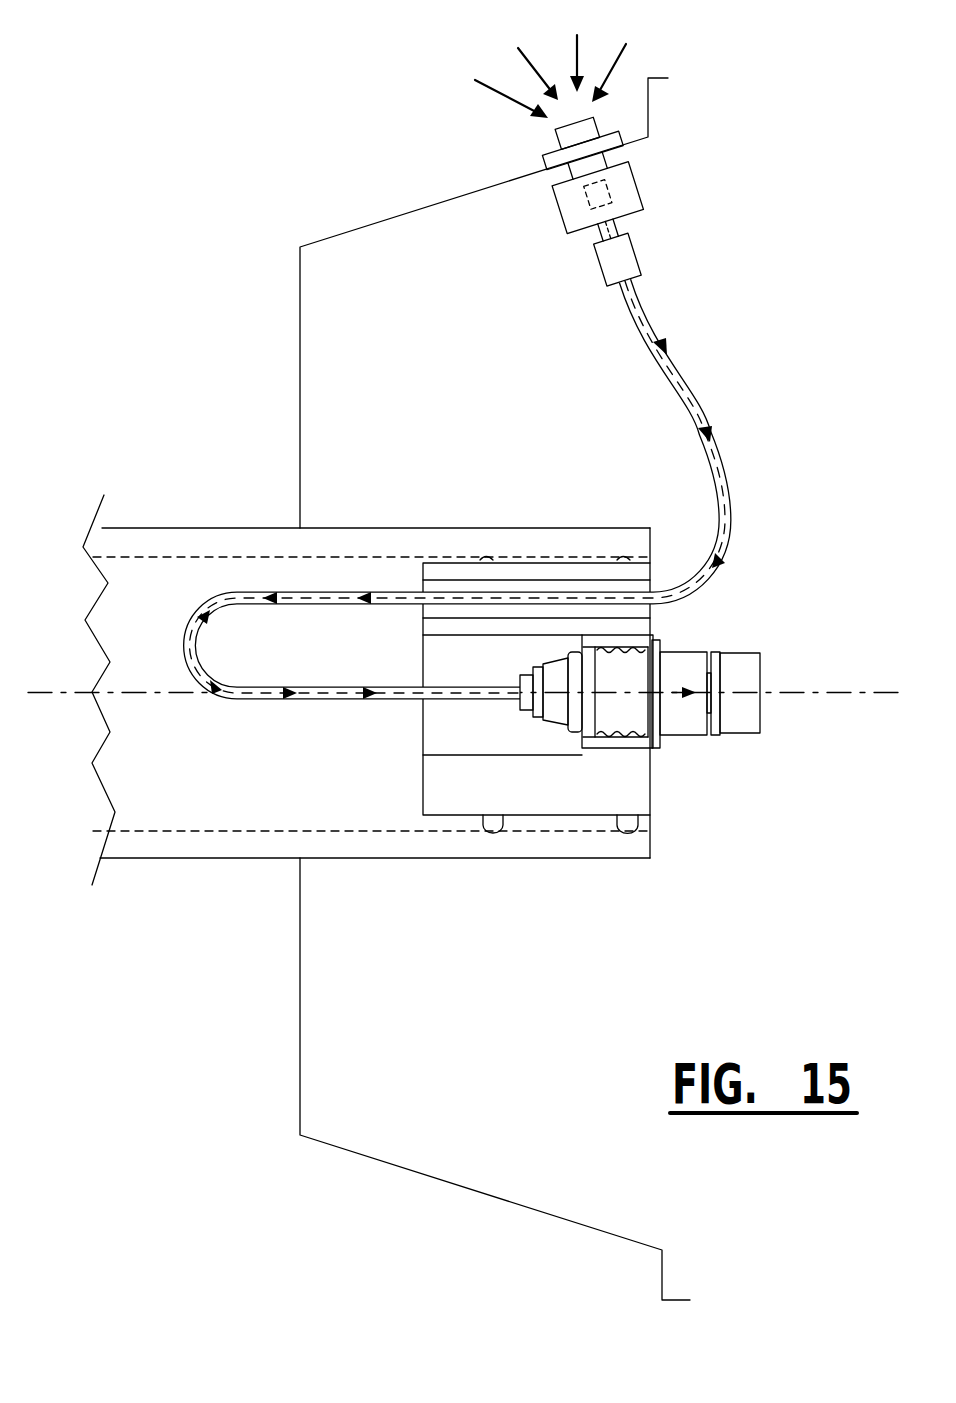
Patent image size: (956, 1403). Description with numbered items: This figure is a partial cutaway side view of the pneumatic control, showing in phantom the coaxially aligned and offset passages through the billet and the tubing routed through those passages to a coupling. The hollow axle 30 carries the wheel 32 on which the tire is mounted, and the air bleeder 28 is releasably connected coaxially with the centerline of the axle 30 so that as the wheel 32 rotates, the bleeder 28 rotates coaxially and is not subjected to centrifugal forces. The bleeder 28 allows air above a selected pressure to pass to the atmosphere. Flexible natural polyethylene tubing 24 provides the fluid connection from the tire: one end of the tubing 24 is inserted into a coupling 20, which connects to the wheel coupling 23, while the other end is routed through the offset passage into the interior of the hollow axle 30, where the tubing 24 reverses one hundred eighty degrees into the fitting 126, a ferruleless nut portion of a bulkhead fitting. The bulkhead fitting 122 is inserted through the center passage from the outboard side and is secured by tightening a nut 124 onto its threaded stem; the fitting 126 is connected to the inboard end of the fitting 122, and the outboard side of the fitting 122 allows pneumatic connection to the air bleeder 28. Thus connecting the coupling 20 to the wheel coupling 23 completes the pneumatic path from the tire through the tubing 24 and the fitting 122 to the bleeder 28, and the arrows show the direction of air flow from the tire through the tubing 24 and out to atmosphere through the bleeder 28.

The coupling 20 is at (600, 259).
The wheel coupling 23 is at (642, 188).
The tubing 24 is at (714, 436).
The air bleeder 28 is at (760, 710).
The axle 30 is at (205, 860).
The wheel 32 is at (412, 212).
The fitting 122 is at (687, 652).
The nut 124 is at (570, 742).
The fitting 126 is at (553, 663).